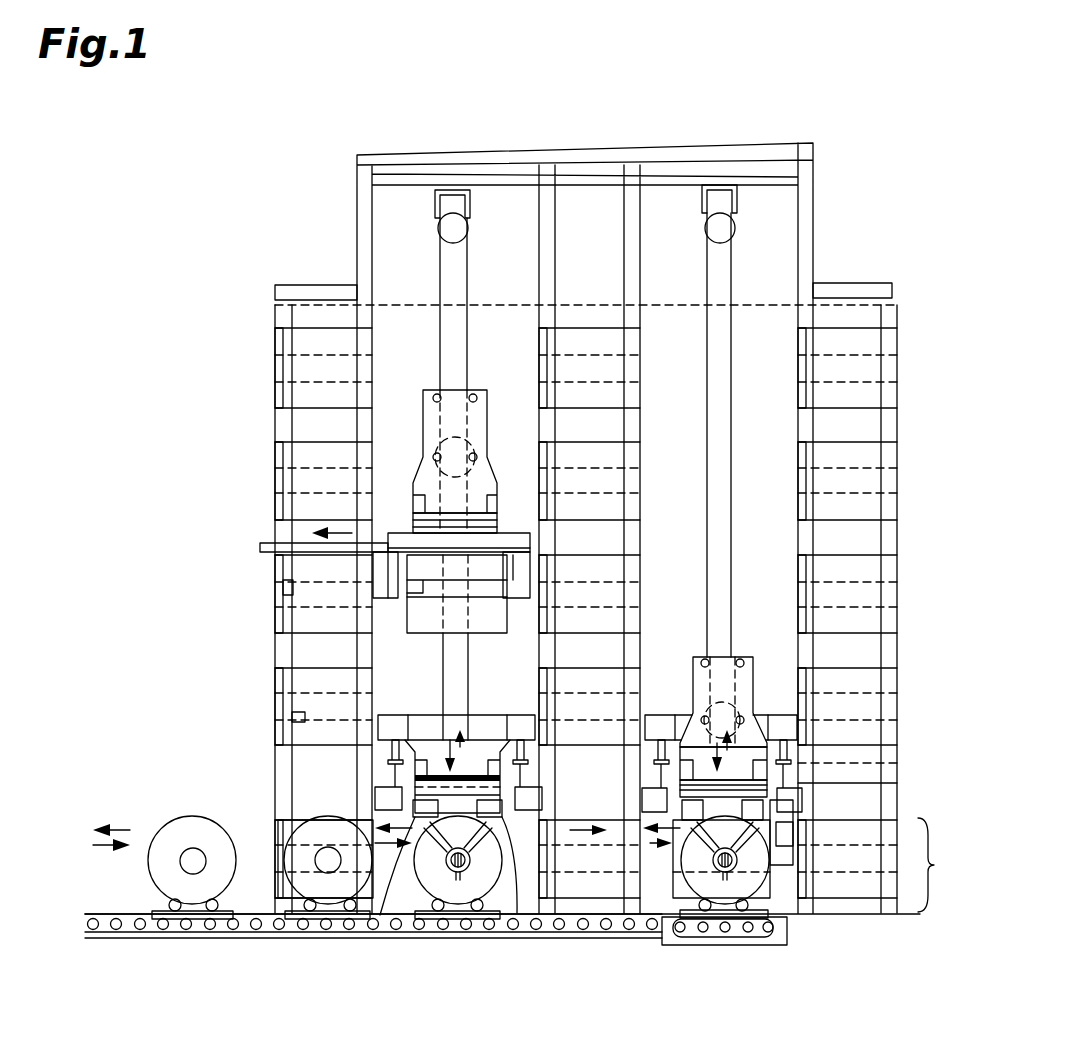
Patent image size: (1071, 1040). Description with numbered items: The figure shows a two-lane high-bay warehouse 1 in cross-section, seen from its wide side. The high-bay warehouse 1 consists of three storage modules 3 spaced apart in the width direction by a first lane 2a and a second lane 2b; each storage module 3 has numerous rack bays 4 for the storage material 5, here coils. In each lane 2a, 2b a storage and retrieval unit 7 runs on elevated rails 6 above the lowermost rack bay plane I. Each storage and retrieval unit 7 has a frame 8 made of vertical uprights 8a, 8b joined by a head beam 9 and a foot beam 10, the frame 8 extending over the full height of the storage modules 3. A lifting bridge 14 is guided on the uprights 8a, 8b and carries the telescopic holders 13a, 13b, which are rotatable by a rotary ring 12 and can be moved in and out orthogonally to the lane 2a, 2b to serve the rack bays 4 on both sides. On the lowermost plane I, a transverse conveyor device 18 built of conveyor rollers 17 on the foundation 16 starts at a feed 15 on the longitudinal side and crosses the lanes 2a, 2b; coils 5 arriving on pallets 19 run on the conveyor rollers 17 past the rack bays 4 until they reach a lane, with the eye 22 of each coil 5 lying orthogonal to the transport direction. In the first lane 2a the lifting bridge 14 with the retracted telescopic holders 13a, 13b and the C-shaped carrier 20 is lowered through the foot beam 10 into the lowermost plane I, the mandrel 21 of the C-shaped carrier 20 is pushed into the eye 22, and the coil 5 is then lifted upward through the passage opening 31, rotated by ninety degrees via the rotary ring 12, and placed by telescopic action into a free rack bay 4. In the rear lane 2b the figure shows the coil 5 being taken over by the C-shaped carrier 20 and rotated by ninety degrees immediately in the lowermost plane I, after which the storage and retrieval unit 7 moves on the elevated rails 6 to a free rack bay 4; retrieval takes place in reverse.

The high-bay warehouse 1 is at (858, 170).
The first lane 2a is at (522, 358).
The second lane 2b is at (782, 358).
The storage module 3 is at (282, 436).
The rack bay 4 is at (307, 877).
The storage material (coil) 5 is at (302, 347).
The elevated rails 6 is at (390, 770).
The storage and retrieval unit 7 is at (482, 278).
The frame 8 is at (576, 435).
The vertical upright 8a is at (453, 304).
The vertical upright 8b is at (719, 435).
The head beam 9 is at (435, 204).
The foot beam 10 is at (380, 716).
The rotary ring 12 is at (423, 524).
The telescopic holder 13a is at (407, 822).
The telescopic holder 13b is at (492, 920).
The lifting bridge 14 is at (483, 465).
The feed 15 is at (93, 874).
The foundation 16 is at (318, 942).
The conveyor roller 17 is at (162, 928).
The transverse conveyor device 18 is at (70, 917).
The pallet 19 is at (197, 915).
The C-shaped carrier 20 is at (530, 505).
The mandrel 21 is at (480, 590).
The eye 22 is at (373, 584).
The passage opening 31 is at (428, 712).
The lowermost rack bay plane I is at (930, 865).